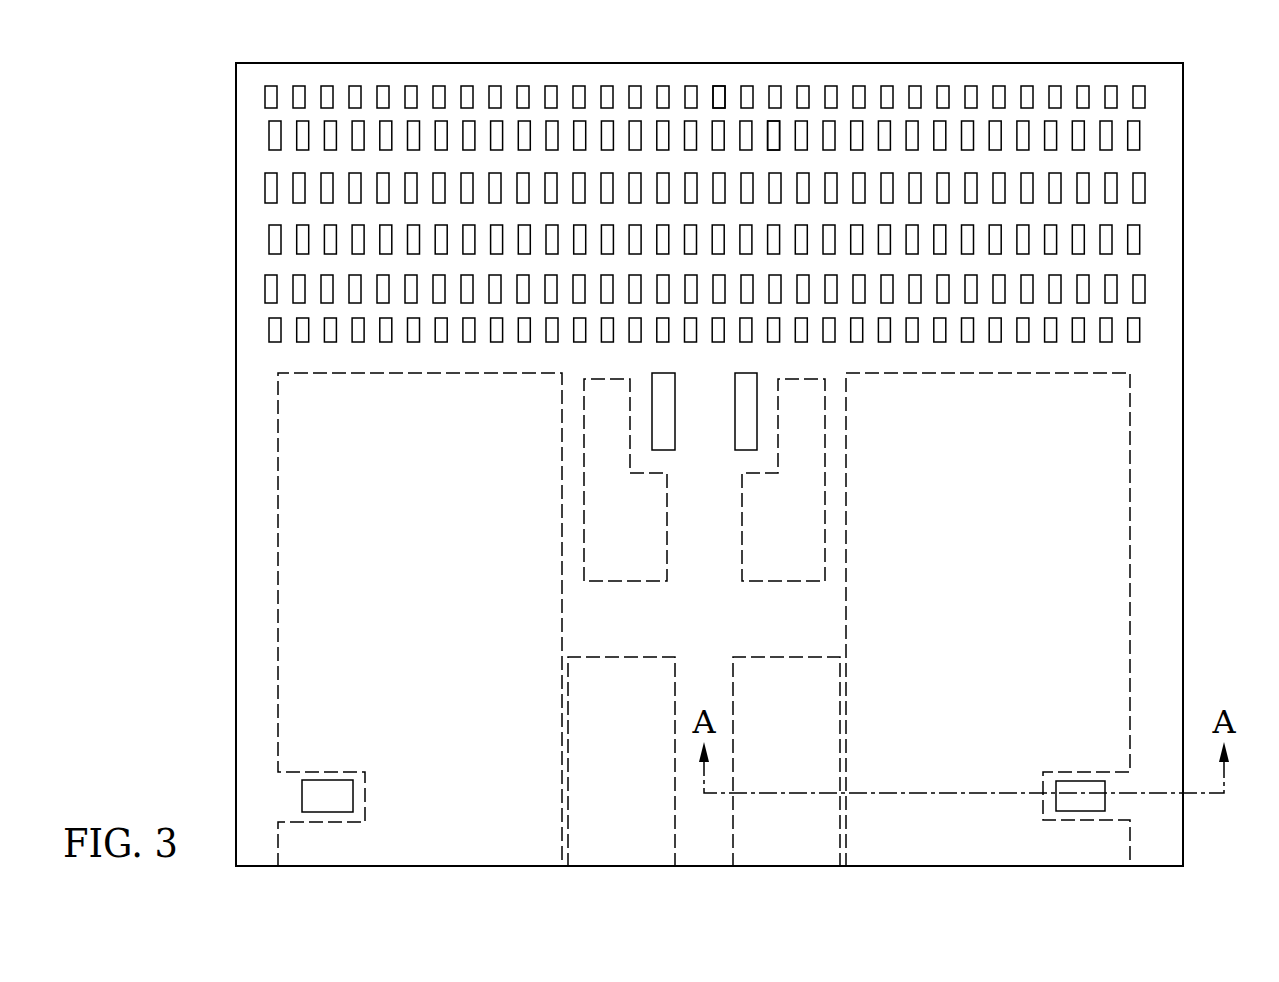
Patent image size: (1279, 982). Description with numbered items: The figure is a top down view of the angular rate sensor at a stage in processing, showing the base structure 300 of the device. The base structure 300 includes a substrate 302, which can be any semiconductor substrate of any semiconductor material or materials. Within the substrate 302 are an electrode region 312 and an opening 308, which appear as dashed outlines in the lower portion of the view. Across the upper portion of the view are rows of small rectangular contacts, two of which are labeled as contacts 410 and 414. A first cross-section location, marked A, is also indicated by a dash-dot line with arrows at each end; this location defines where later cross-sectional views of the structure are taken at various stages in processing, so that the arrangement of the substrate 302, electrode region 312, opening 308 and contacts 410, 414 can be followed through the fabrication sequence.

The base structure 300 is at (1207, 79).
The substrate 302 is at (434, 845).
The opening 308 is at (1110, 582).
The electrode region 312 is at (774, 841).
The contact 410 is at (716, 97).
The contact 414 is at (768, 132).